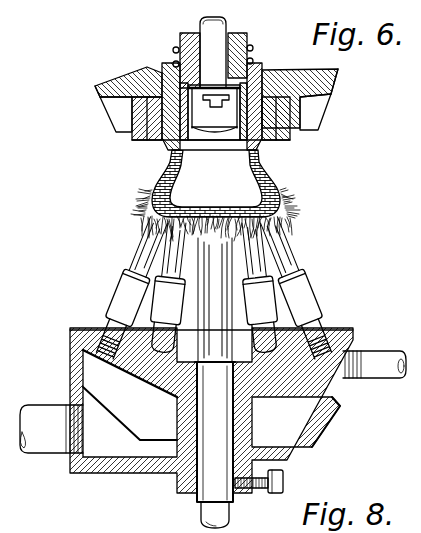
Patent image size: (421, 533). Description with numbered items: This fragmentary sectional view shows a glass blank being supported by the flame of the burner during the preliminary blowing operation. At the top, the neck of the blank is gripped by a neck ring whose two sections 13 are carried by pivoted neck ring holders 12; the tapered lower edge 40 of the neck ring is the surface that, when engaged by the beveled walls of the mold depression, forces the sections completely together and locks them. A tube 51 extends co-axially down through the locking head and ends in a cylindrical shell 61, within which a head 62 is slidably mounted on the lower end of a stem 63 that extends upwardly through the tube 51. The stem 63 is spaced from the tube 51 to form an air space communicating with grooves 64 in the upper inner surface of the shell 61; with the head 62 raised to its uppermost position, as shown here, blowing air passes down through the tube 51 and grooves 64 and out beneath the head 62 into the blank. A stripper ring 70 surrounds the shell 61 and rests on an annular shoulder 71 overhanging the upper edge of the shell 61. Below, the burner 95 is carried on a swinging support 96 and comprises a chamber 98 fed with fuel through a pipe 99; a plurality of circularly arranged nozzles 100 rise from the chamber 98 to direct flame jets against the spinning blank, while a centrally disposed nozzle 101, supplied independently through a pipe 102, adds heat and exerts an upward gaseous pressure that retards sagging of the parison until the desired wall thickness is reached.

The neck ring holder 12 is at (100, 83).
The neck ring section 13 is at (132, 140).
The tapered lower edge of the neck ring 40 is at (160, 147).
The tube 51 is at (185, 38).
The cylindrical shell 61 is at (267, 73).
The head 62 is at (215, 133).
The stem 63 is at (222, 23).
The grooves 64 is at (133, 103).
The stripper ring 70 is at (170, 64).
The annular shoulder 71 is at (251, 63).
The burner 95 is at (72, 360).
The swinging support 96 is at (38, 450).
The chamber 98 is at (318, 400).
The pipe 99 is at (378, 350).
The nozzles 100 is at (160, 303).
The centrally disposed nozzle 101 is at (205, 470).
The pipe 102 is at (204, 522).